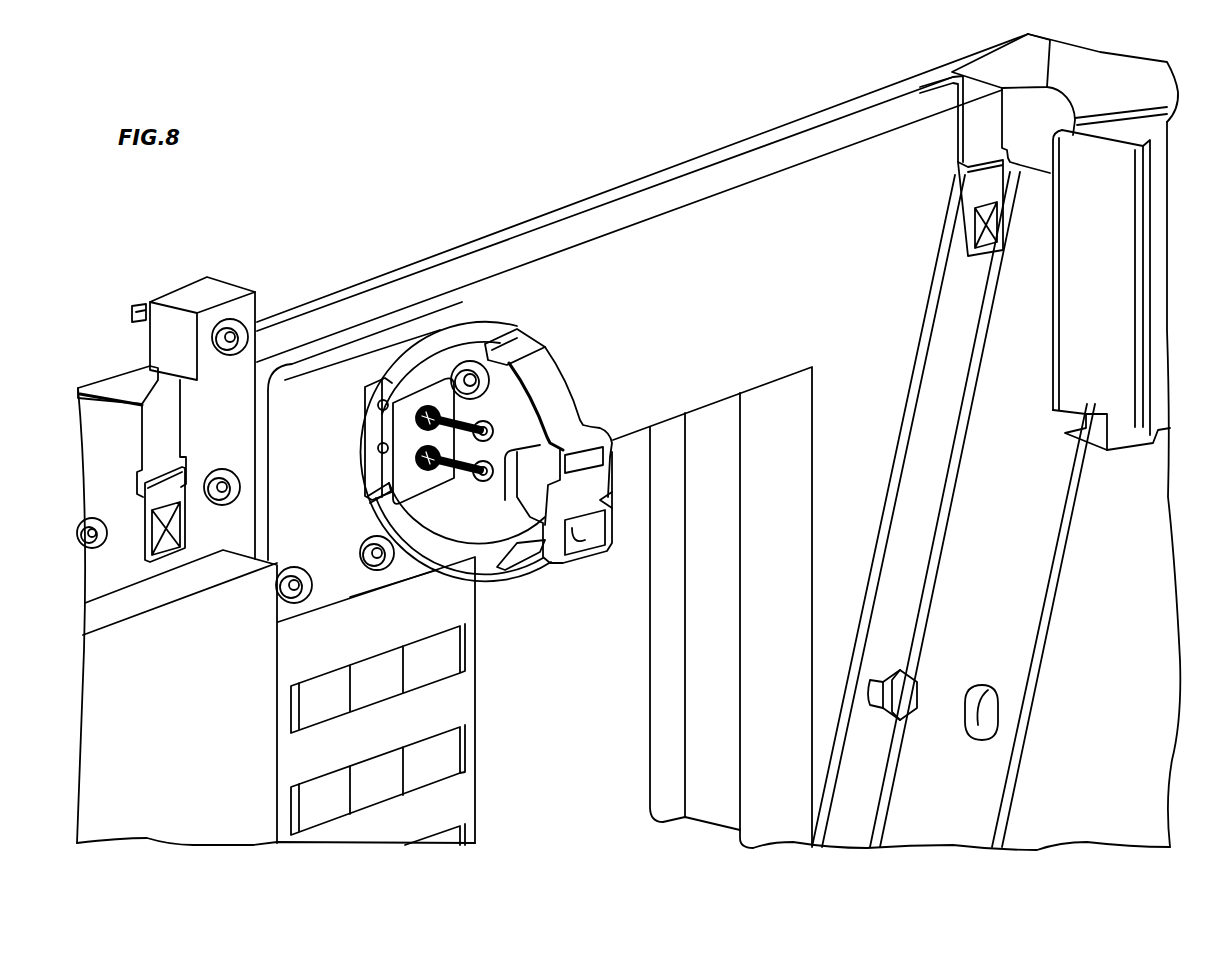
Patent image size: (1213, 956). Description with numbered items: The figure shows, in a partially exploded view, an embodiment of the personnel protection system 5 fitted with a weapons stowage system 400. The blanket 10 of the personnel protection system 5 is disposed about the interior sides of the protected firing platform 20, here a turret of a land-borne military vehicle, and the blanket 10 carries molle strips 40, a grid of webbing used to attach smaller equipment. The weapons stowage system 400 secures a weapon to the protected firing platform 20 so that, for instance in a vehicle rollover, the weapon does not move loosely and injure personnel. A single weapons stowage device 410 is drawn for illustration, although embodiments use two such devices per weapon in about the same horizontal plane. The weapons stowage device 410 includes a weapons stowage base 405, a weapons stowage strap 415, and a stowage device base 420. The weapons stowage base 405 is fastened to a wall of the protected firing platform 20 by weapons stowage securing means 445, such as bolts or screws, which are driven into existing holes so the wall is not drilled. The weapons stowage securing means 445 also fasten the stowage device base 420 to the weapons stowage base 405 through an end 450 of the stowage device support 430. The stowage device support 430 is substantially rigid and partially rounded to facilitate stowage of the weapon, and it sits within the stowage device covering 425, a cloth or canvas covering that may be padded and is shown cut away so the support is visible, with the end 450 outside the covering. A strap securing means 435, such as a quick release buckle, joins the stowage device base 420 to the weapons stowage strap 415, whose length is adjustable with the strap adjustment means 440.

The personnel protection system 5 is at (652, 122).
The blanket 10 is at (720, 217).
The protected firing platform 20 is at (817, 108).
The molle strips 40 is at (447, 752).
The weapons stowage system 400 is at (410, 308).
The weapons stowage base 405 is at (288, 390).
The weapons stowage device 410 is at (467, 323).
The weapons stowage strap 415 is at (553, 388).
The stowage device base 420 is at (473, 570).
The stowage device covering 425 is at (437, 573).
The stowage device support 430 is at (397, 518).
The strap securing means 435 is at (610, 493).
The strap adjustment means 440 is at (520, 335).
The weapons stowage securing means 445 is at (507, 547).
The end of stowage device support 450 is at (390, 435).